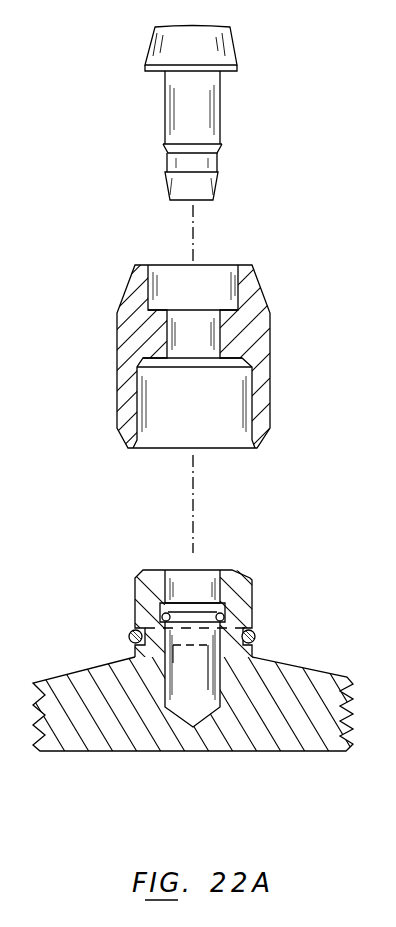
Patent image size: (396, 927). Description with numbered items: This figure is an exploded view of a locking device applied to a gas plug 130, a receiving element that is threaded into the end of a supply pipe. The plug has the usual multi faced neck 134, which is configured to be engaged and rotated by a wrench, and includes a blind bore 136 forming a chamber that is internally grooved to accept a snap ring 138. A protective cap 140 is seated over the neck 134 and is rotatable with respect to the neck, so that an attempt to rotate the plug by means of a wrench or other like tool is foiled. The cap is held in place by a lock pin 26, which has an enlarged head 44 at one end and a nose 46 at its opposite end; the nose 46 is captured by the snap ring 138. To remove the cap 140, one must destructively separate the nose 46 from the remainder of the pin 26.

The enlarged head 44 is at (238, 53).
The pin 26 is at (221, 120).
The nose 46 is at (219, 182).
The protective cap 140 is at (260, 327).
The gas plug 130 is at (287, 667).
The multi faced neck 134 is at (253, 598).
The blind bore 136 is at (212, 580).
The snap ring 138 is at (160, 617).